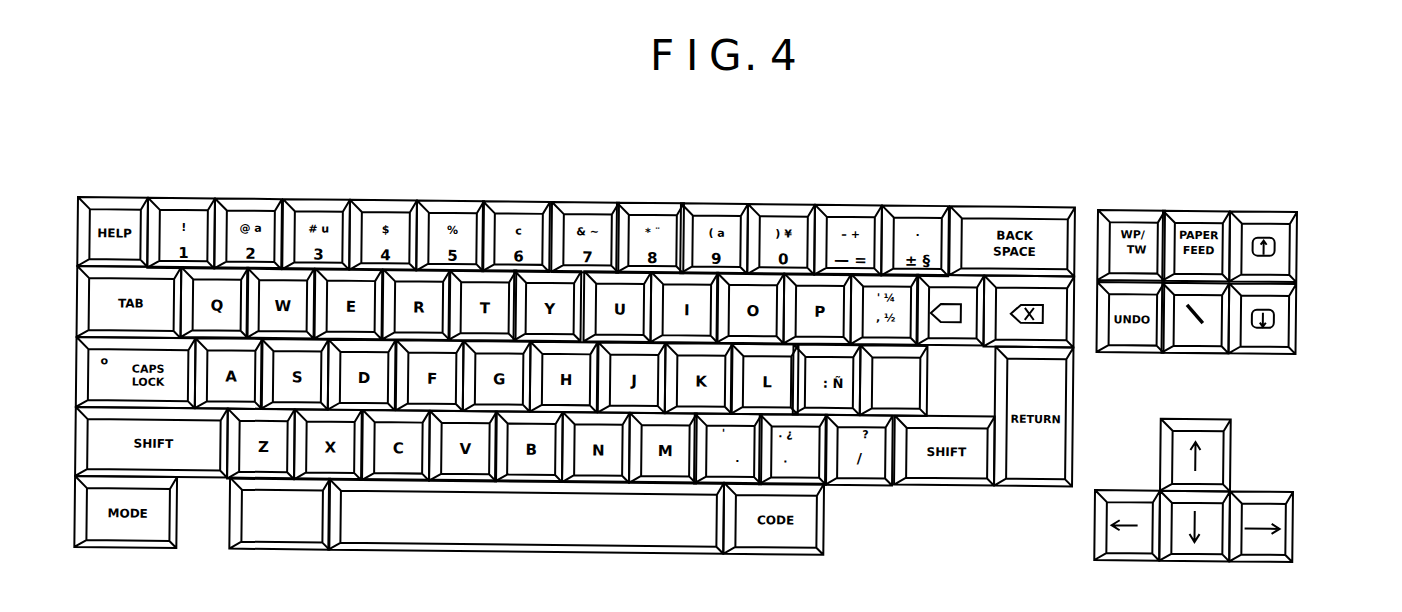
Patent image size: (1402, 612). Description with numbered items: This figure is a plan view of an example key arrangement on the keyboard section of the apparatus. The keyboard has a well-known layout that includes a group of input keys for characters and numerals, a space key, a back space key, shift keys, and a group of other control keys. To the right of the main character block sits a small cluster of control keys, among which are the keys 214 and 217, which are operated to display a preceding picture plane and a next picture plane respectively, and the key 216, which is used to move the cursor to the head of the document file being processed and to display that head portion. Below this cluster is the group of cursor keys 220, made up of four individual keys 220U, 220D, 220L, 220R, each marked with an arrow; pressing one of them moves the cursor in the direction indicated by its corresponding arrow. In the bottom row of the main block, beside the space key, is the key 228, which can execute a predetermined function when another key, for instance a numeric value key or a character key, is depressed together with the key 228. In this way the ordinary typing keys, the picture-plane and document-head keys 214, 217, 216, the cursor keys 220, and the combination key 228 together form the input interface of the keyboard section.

The preceding picture plane key 214 is at (1273, 232).
The document head key 216 is at (1190, 330).
The next picture plane key 217 is at (1268, 333).
The group of cursor keys 220 is at (1190, 515).
The up cursor key 220U is at (1210, 453).
The down cursor key 220D is at (1207, 505).
The left cursor key 220L is at (1115, 535).
The right cursor key 220R is at (1305, 526).
The code key 228 is at (286, 535).